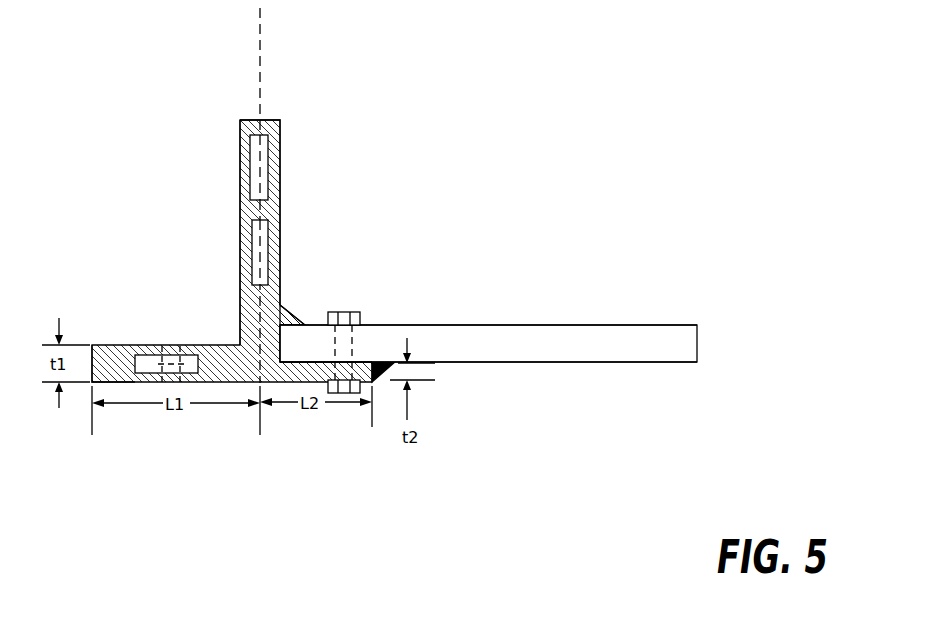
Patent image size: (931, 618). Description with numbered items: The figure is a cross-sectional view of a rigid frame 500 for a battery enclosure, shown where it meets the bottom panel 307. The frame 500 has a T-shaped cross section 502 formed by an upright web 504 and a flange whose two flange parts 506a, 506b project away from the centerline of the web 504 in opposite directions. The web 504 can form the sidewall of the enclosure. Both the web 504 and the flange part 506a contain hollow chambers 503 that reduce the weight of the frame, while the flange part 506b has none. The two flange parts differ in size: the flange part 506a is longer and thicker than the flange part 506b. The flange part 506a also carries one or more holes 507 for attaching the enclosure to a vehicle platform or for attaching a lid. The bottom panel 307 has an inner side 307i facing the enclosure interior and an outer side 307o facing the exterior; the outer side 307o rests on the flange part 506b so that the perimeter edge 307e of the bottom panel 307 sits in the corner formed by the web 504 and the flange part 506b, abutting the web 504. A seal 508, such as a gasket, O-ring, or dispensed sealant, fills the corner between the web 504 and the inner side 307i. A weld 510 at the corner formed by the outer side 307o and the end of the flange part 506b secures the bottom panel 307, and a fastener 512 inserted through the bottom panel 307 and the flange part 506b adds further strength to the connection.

The rigid frame 500 is at (129, 48).
The T-shaped cross section 502 is at (287, 115).
The hollow chambers 503 is at (263, 175).
The web 504 is at (250, 260).
The flange part 506a is at (110, 380).
The flange part 506b is at (373, 382).
The holes 507 is at (170, 355).
The seal 508 is at (288, 318).
The weld 510 is at (380, 362).
The fastener 512 is at (345, 314).
The bottom panel 307 is at (697, 340).
The inner side 307i is at (690, 325).
The outer side 307o is at (665, 362).
The perimeter edge 307e is at (280, 342).